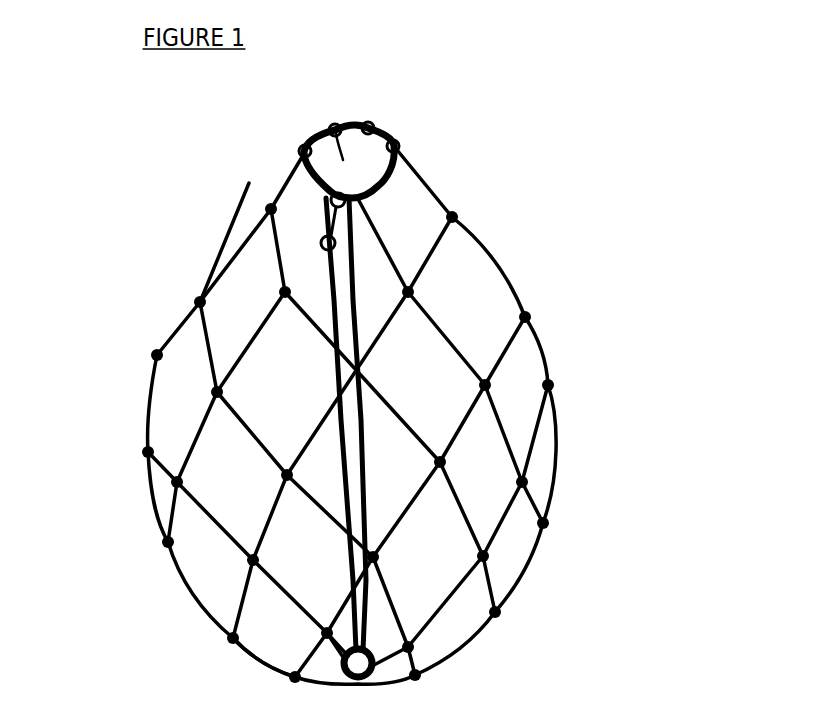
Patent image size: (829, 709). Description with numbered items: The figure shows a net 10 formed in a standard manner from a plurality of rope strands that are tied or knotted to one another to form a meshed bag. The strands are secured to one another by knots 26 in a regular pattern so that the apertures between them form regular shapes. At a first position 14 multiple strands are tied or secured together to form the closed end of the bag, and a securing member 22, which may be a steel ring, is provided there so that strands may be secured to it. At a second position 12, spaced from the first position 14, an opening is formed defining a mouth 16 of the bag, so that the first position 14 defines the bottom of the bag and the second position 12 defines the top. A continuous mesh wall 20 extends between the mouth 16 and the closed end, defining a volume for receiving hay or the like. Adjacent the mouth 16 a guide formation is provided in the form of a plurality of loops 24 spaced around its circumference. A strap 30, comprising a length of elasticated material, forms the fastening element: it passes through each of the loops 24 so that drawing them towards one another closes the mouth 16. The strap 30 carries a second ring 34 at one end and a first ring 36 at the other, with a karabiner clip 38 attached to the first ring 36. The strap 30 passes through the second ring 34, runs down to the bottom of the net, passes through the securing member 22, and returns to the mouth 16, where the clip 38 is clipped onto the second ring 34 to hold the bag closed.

The net 10 is at (583, 185).
The second position 12 is at (250, 178).
The first position 14 is at (217, 662).
The mouth 16 is at (337, 124).
The mesh wall 20 is at (547, 345).
The securing member 22 is at (380, 661).
The loops 24 is at (330, 123).
The knots 26 is at (533, 306).
The strap 30 is at (388, 210).
The second ring 34 is at (397, 153).
The first ring 36 is at (325, 262).
The karabiner clip 38 is at (323, 222).